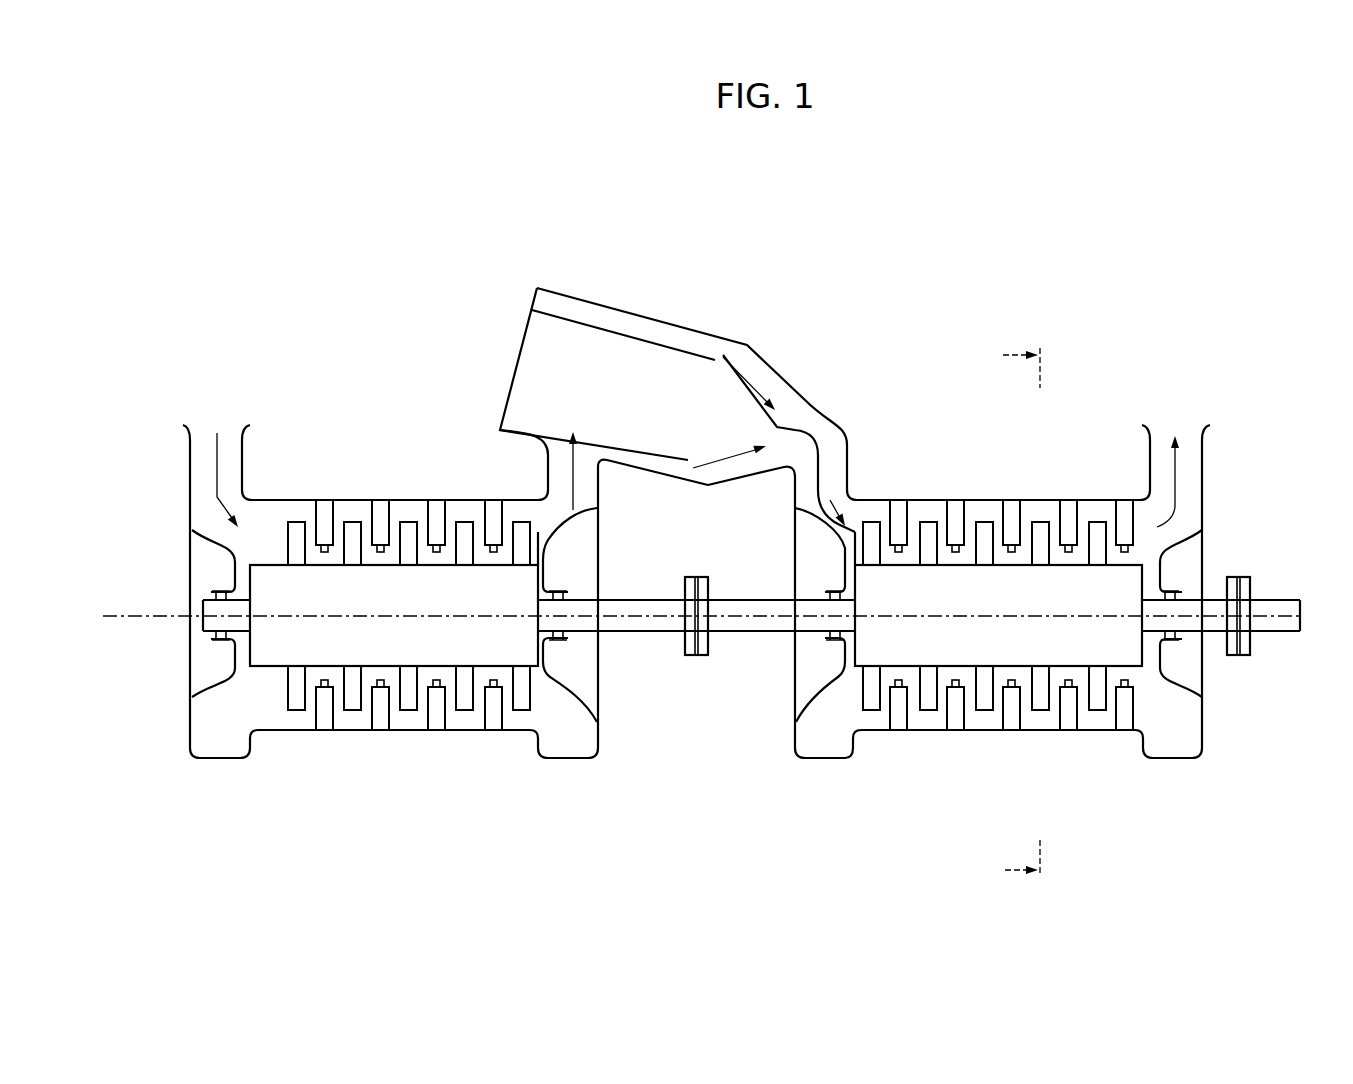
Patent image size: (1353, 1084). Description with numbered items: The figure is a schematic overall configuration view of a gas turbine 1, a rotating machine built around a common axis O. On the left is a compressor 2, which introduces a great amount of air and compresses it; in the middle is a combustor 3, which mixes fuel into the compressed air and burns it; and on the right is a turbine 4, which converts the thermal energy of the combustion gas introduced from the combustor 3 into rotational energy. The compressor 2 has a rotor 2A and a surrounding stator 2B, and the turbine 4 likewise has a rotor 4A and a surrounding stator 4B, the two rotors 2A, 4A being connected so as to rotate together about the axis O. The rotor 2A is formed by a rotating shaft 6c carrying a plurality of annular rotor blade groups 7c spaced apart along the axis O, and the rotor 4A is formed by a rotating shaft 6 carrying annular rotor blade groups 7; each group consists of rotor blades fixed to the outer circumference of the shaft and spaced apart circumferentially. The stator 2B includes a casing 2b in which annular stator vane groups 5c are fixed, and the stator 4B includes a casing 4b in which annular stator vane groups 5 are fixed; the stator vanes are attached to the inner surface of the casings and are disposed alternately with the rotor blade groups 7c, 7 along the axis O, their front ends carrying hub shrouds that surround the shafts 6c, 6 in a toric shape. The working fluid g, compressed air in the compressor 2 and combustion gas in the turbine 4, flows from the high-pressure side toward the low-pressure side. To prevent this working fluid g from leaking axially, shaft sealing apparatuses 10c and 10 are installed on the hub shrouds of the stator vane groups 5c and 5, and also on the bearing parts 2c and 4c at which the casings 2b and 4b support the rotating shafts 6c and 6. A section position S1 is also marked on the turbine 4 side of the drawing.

The gas turbine 1 is at (1132, 323).
The compressor 2 is at (217, 785).
The rotor 2A is at (416, 694).
The stator 2B is at (393, 554).
The casing 2b is at (436, 500).
The bearing part 2c is at (228, 553).
The combustor 3 is at (641, 297).
The turbine 4 is at (1184, 787).
The rotor 4A is at (975, 694).
The stator 4B is at (1012, 554).
The casing 4b is at (922, 500).
The bearing part 4c is at (843, 555).
The annular stator vane group 5 is at (1068, 503).
The annular stator vane group 5c is at (436, 503).
The rotating shaft 6 is at (860, 668).
The rotating shaft 6c is at (530, 668).
The annular rotor blade group 7 is at (1095, 712).
The annular rotor blade group 7c is at (406, 666).
The shaft sealing apparatus 10 is at (834, 593).
The shaft sealing apparatus 10c is at (436, 554).
The axis O is at (152, 614).
The section line S1 is at (1022, 612).
The working fluid g is at (217, 476).